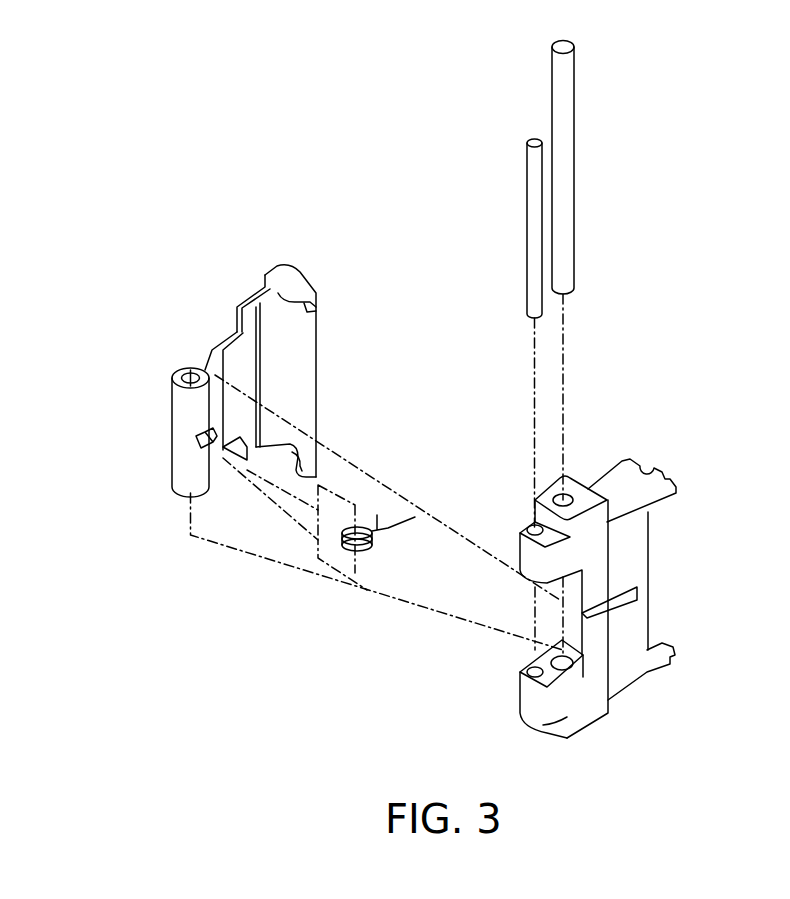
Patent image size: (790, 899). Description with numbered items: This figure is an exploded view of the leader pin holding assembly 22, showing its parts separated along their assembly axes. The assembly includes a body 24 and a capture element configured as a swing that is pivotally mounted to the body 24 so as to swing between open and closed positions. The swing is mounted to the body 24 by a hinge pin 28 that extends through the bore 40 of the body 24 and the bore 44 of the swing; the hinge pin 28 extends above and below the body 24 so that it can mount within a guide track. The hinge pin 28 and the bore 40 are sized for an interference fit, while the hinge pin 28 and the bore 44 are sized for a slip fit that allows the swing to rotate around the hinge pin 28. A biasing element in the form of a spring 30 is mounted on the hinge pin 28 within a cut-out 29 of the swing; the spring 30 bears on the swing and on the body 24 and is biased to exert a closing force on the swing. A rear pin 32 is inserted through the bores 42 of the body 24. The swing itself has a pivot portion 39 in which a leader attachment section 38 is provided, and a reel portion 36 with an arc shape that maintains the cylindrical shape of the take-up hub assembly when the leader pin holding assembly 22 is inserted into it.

The leader pin holding assembly 22 is at (378, 701).
The body 24 is at (577, 564).
The hinge pin 28 is at (575, 195).
The cut-out 29 is at (220, 456).
The spring 30 is at (350, 552).
The rear pin 32 is at (526, 220).
The reel portion 36 is at (303, 281).
The leader attachment section 38 is at (231, 408).
The pivot portion 39 is at (230, 396).
The bore 40 is at (563, 500).
The bores 42 is at (535, 527).
The bore 44 is at (192, 372).